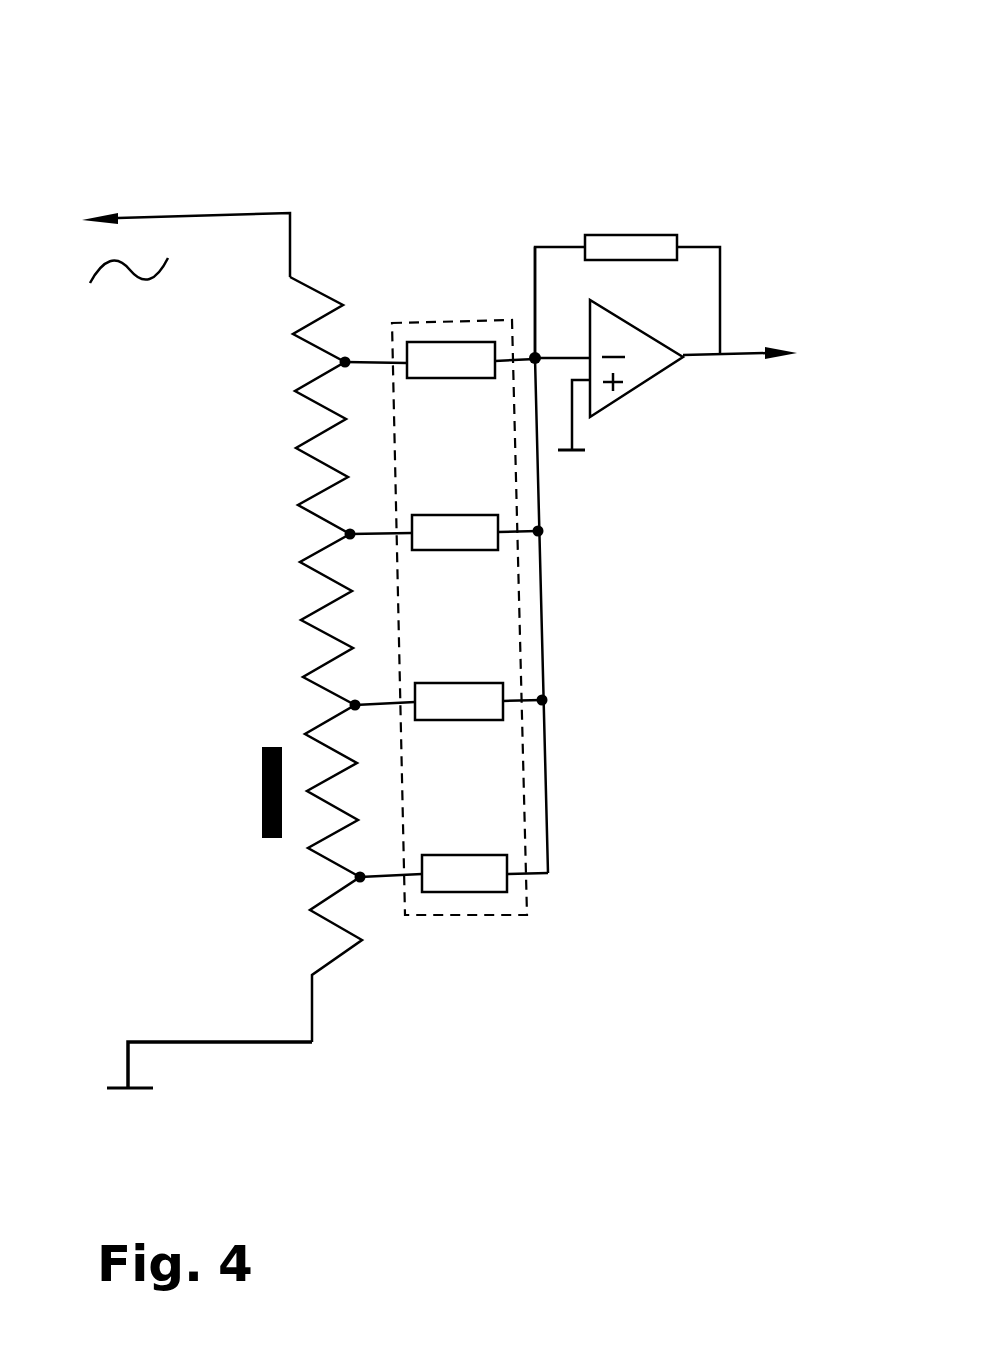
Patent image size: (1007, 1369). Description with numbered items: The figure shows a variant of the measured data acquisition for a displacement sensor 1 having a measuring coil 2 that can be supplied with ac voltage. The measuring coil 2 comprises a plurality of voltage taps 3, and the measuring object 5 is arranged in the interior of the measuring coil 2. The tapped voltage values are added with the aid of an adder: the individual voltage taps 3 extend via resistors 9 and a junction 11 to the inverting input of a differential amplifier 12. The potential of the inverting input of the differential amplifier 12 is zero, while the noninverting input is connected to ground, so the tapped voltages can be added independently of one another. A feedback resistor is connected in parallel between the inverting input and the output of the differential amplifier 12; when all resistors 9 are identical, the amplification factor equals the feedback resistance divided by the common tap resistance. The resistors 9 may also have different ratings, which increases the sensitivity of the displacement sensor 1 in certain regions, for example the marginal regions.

The displacement sensor 1 is at (347, 165).
The measuring coil 2 is at (317, 287).
The voltage taps 3 is at (362, 880).
The measuring object 5 is at (262, 790).
The resistors 9 is at (475, 880).
The junction 11 is at (533, 354).
The differential amplifier 12 is at (647, 367).